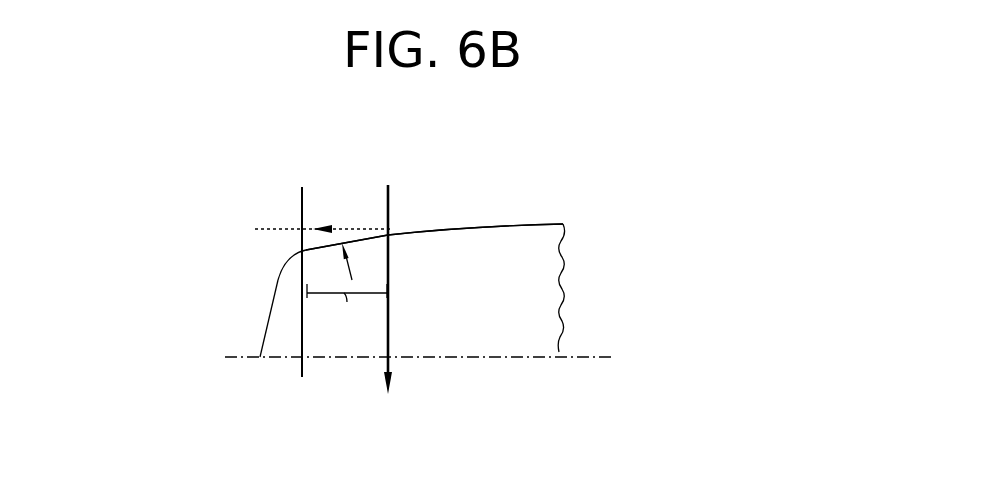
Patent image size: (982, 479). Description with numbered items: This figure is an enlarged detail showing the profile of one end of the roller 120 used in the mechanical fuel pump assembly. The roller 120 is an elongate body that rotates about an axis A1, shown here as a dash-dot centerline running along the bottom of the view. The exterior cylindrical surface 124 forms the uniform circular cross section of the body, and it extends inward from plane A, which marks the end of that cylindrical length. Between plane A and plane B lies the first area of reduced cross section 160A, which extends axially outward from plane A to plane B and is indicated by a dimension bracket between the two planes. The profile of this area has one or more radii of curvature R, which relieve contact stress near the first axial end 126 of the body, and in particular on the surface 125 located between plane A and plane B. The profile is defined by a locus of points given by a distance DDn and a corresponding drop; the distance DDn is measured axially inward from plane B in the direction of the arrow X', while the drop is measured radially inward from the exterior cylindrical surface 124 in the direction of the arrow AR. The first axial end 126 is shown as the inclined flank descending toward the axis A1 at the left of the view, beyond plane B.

The roller 120 is at (520, 240).
The exterior cylindrical surface 124 is at (475, 223).
The surface 125 is at (352, 230).
The first axial end 126 is at (260, 356).
The first area of reduced cross section 160A is at (347, 312).
The plane A is at (392, 200).
The plane B is at (306, 198).
The arrow X' is at (255, 208).
The radius of curvature R is at (352, 265).
The arrow AR is at (388, 338).
The axis A1 is at (590, 358).
The distance DDn is at (307, 248).